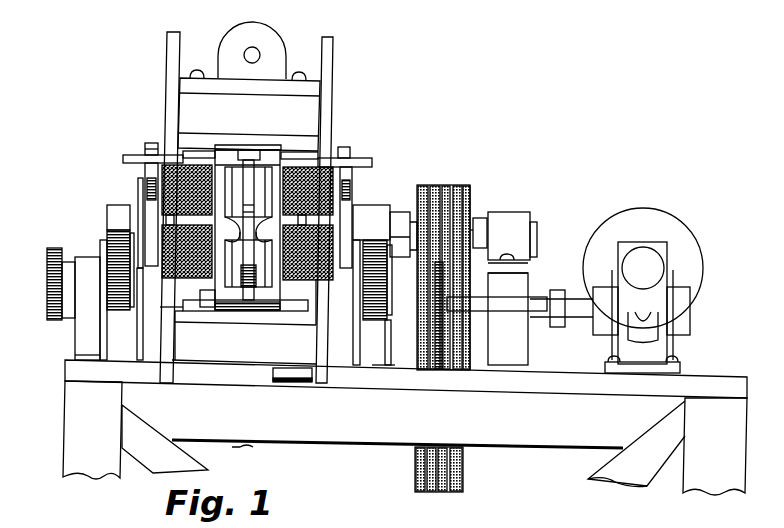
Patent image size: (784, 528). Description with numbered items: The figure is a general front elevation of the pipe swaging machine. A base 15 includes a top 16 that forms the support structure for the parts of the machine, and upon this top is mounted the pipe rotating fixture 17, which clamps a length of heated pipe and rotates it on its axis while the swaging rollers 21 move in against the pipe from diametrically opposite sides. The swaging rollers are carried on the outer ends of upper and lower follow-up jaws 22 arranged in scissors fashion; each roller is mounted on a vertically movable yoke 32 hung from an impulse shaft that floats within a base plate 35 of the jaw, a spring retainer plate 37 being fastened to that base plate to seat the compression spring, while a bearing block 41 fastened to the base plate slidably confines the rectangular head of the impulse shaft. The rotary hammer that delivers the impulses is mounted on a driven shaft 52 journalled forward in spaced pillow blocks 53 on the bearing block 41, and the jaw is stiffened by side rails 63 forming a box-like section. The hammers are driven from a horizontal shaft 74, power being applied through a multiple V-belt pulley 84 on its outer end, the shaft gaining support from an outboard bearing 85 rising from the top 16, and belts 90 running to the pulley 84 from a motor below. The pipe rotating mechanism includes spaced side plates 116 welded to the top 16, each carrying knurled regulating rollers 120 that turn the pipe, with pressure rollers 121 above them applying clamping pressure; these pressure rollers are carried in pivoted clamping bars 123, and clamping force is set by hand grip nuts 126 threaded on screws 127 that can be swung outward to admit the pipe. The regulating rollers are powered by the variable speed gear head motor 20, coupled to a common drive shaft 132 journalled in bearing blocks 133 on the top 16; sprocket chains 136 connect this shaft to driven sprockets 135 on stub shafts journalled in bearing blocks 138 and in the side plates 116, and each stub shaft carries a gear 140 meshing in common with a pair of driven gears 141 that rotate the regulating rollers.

The base 15 is at (62, 418).
The top 16 is at (740, 382).
The pipe rotating fixture 17 is at (134, 180).
The variable speed gear head motor 20 is at (690, 248).
The swaging rollers 21 is at (264, 150).
The follow-up jaws 22 is at (336, 60).
The yoke 32 is at (240, 152).
The base plate 35 is at (212, 146).
The spring retainer plate 37 is at (199, 326).
The bearing block 41 is at (316, 111).
The driven shaft 52 is at (254, 47).
The pillow blocks 53 is at (270, 26).
The side rails 63 is at (168, 357).
The horizontal shaft 74 is at (480, 232).
The V-belt pulley 84 is at (470, 196).
The outboard bearing 85 is at (522, 222).
The belts 90 is at (464, 462).
The side plates 116 is at (138, 326).
The regulating rollers 120 is at (196, 330).
The pressure rollers 121 is at (316, 160).
The clamping bars 123 is at (138, 195).
The hand grip nuts 126 is at (143, 160).
The screws 127 is at (150, 144).
The common drive shaft 132 is at (503, 318).
The bearing blocks 133 is at (112, 214).
The driven sprockets 135 is at (53, 320).
The sprocket chains 136 is at (46, 303).
The bearing blocks 138 is at (80, 351).
The gear 140 is at (374, 322).
The driven gears 141 is at (375, 246).